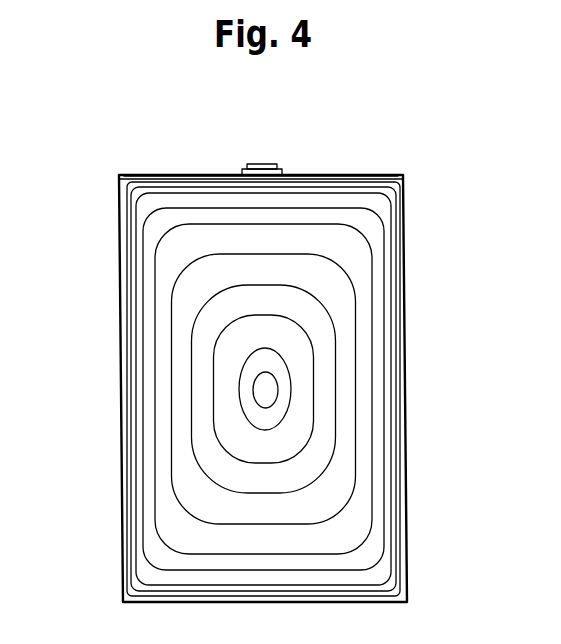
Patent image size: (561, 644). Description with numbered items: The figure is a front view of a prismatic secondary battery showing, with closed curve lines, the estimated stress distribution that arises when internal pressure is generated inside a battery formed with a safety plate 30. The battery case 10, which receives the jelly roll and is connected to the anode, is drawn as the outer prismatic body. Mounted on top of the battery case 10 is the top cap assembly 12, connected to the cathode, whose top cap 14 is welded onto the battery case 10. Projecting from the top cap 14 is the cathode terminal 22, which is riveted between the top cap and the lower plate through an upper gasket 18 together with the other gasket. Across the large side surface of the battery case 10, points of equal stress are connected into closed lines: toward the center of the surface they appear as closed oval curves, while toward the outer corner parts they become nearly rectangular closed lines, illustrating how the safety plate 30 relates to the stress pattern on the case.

The battery case 10 is at (121, 483).
The top cap assembly 12 is at (343, 156).
The top cap 14 is at (159, 175).
The upper gasket 18 is at (282, 170).
The cathode terminal 22 is at (255, 166).
The safety plate 30 is at (391, 243).